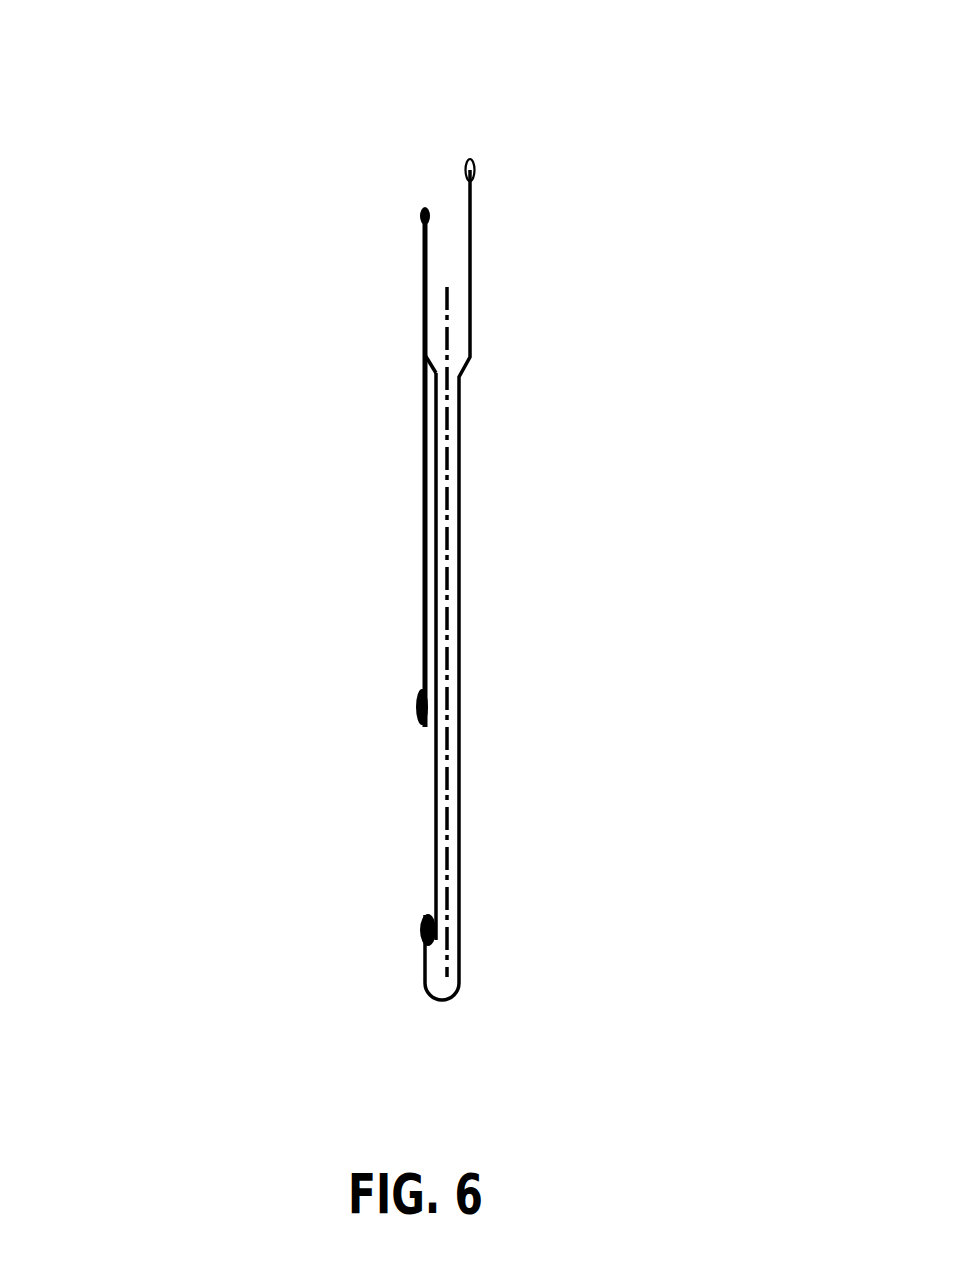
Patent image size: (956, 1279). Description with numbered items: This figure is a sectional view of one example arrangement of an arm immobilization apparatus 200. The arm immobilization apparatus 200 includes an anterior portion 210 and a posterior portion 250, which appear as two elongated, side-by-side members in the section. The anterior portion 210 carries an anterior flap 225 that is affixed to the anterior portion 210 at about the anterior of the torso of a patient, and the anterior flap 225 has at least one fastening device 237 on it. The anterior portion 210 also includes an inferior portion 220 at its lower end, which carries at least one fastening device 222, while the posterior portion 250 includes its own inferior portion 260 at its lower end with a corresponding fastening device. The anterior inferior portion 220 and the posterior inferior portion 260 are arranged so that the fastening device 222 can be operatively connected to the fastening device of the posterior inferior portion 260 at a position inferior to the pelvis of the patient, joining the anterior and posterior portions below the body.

The arm immobilization apparatus 200 is at (338, 244).
The anterior portion 210 is at (317, 431).
The inferior portion 220 is at (435, 833).
The fastening device 222 is at (415, 937).
The anterior flap 225 is at (423, 517).
The fastening device 237 is at (418, 701).
The posterior portion 250 is at (532, 427).
The inferior portion 260 is at (452, 888).